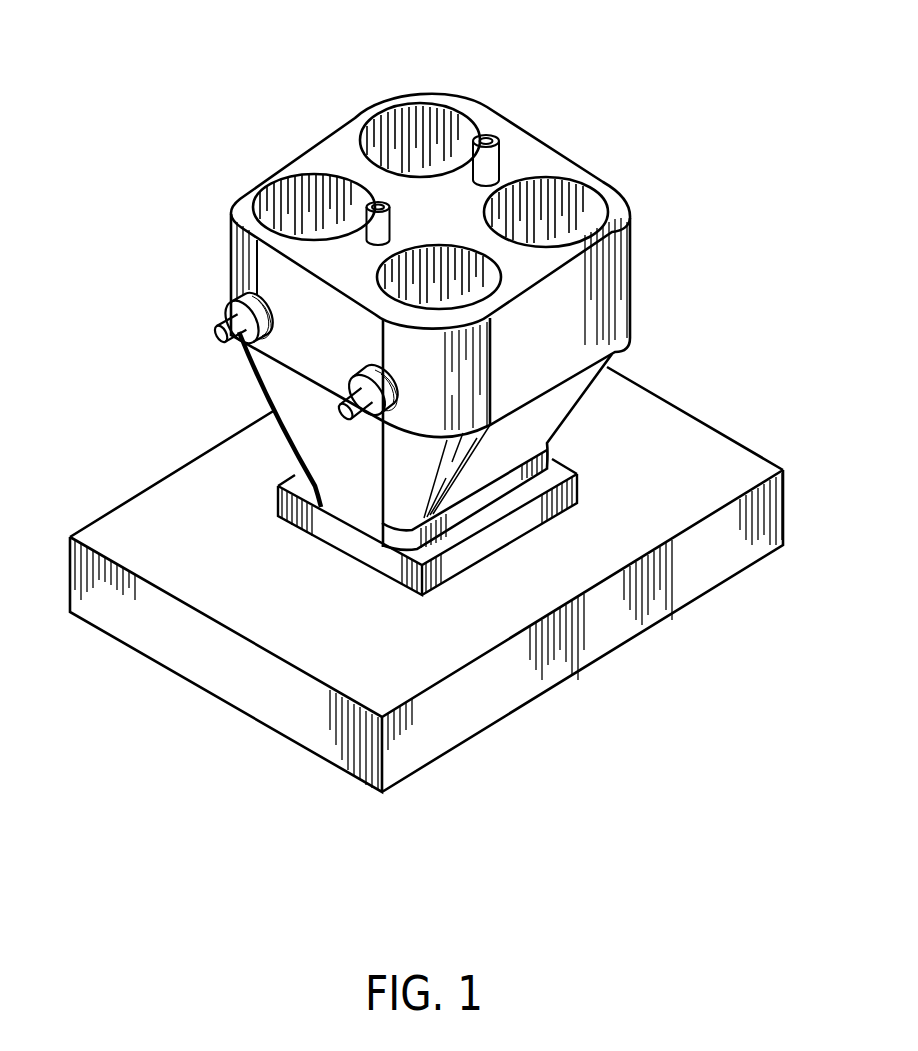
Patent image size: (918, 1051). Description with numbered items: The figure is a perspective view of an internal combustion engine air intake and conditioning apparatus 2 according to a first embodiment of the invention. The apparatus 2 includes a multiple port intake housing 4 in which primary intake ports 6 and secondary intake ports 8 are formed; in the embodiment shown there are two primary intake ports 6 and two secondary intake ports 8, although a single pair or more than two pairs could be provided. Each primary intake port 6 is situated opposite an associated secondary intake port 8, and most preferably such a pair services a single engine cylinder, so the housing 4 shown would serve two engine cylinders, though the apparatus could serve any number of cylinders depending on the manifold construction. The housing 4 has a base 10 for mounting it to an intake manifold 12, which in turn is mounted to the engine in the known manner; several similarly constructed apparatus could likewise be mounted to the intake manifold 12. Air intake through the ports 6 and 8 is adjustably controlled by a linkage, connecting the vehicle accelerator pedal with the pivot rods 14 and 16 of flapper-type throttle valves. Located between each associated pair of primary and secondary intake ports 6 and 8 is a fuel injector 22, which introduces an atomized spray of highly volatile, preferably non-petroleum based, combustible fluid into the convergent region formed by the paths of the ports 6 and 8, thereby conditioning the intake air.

The apparatus 2 is at (356, 92).
The multiple port intake housing 4 is at (647, 277).
The primary intake ports 6 is at (307, 193).
The secondary intake ports 8 is at (567, 207).
The base 10 is at (555, 475).
The intake manifold 12 is at (603, 637).
The pivot rod 14 is at (219, 337).
The pivot rod 16 is at (346, 412).
The fuel injector 22 is at (490, 160).